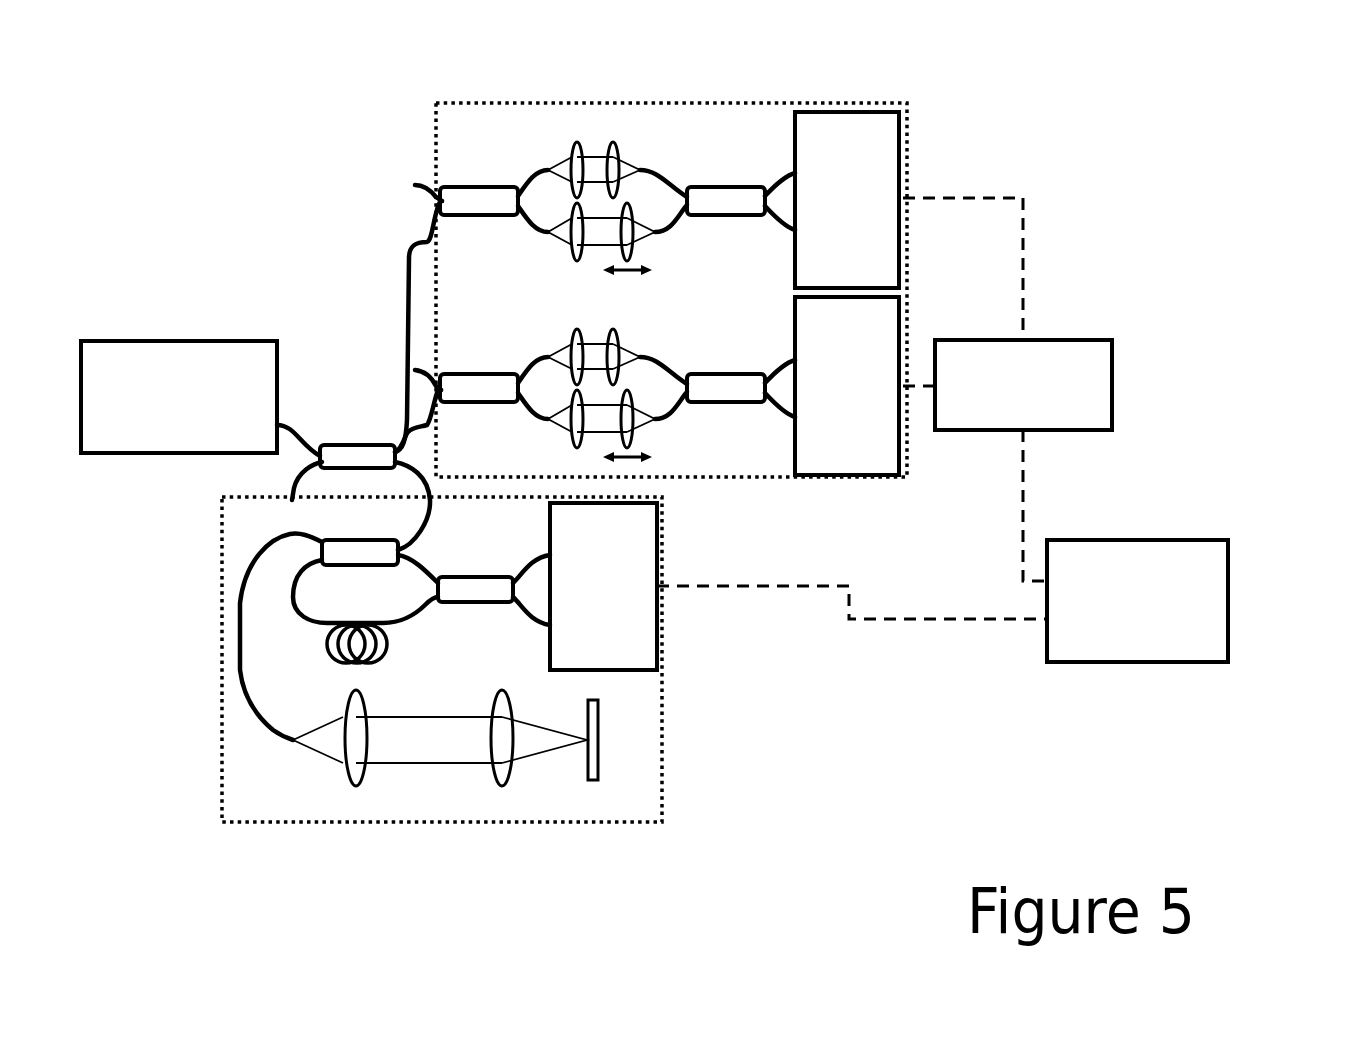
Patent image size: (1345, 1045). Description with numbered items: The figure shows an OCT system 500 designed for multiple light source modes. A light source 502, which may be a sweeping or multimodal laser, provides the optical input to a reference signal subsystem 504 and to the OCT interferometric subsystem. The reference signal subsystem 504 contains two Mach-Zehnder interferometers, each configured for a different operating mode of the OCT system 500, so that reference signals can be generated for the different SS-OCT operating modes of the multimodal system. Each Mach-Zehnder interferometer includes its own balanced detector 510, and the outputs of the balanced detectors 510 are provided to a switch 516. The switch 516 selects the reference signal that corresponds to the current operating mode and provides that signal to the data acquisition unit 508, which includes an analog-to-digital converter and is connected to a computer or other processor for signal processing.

The OCT system 500 is at (1100, 140).
The light source 502 is at (170, 341).
The reference signal subsystem 504 is at (903, 175).
The data acquisition unit 508 is at (1160, 540).
The balanced detector 510 is at (880, 459).
The switch 516 is at (1080, 340).